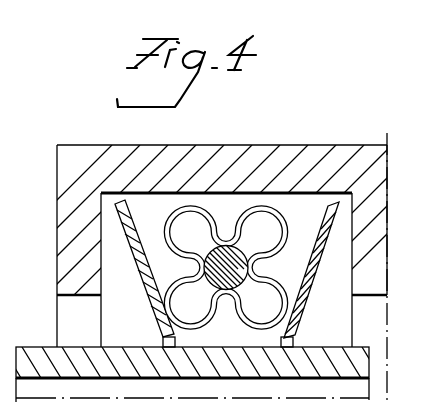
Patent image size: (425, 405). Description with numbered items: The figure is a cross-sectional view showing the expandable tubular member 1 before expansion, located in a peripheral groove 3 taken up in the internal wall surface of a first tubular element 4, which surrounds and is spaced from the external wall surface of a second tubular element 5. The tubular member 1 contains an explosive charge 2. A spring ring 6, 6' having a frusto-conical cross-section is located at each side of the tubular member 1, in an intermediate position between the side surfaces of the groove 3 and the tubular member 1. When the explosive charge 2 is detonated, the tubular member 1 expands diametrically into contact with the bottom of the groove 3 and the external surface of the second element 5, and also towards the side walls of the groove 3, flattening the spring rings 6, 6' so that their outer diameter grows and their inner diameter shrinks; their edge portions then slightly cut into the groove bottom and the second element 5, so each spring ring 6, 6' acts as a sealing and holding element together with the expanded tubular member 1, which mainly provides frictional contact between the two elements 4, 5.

The tubular member 1 is at (172, 219).
The explosive charge 2 is at (249, 266).
The peripheral groove 3 is at (101, 262).
The first tubular element 4 is at (80, 145).
The second tubular element 5 is at (32, 358).
The spring ring 6 is at (223, 250).
The spring ring 6' is at (346, 272).